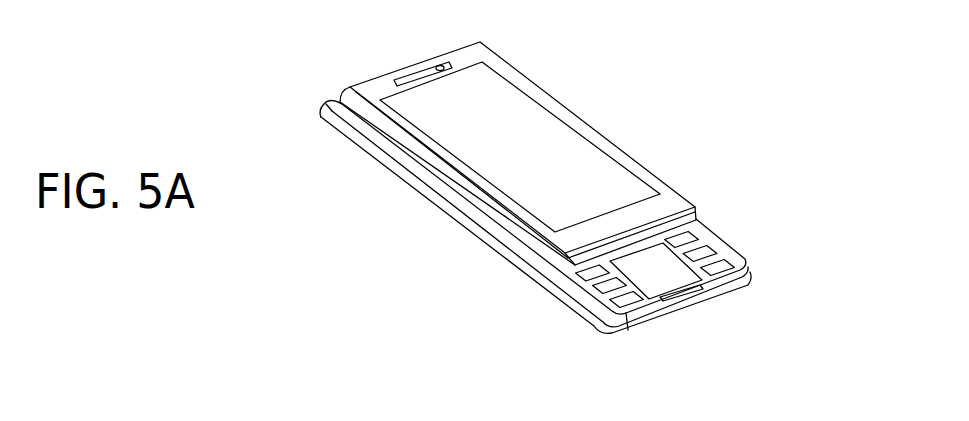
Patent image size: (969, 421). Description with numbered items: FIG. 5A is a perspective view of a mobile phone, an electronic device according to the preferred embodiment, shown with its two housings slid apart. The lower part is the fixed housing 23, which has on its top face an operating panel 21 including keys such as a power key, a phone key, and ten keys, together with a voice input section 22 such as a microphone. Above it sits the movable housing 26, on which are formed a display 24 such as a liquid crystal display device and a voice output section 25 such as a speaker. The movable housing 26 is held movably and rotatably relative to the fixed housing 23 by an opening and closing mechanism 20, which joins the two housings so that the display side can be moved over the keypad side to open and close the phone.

The opening and closing mechanism 20 is at (442, 188).
The operating panel 21 is at (723, 262).
The voice input section 22 is at (746, 275).
The fixed housing 23 is at (685, 302).
The display 24 is at (533, 133).
The voice output section 25 is at (480, 49).
The movable housing 26 is at (660, 178).